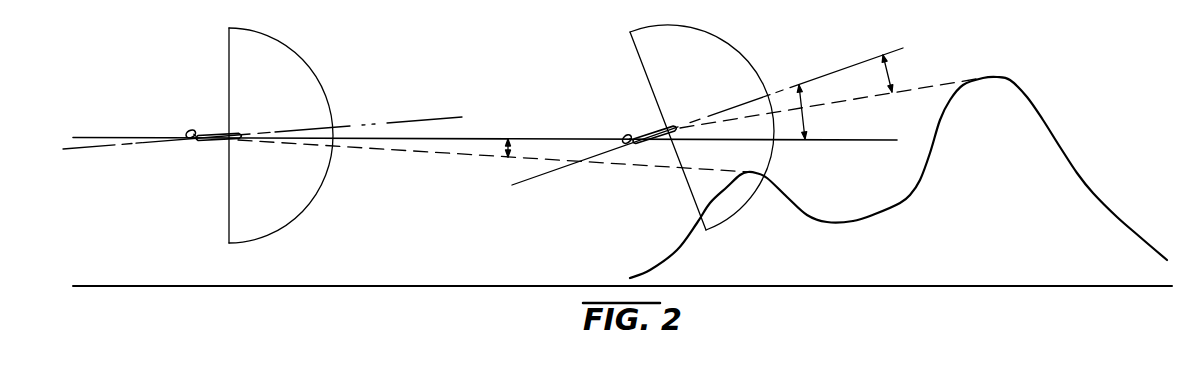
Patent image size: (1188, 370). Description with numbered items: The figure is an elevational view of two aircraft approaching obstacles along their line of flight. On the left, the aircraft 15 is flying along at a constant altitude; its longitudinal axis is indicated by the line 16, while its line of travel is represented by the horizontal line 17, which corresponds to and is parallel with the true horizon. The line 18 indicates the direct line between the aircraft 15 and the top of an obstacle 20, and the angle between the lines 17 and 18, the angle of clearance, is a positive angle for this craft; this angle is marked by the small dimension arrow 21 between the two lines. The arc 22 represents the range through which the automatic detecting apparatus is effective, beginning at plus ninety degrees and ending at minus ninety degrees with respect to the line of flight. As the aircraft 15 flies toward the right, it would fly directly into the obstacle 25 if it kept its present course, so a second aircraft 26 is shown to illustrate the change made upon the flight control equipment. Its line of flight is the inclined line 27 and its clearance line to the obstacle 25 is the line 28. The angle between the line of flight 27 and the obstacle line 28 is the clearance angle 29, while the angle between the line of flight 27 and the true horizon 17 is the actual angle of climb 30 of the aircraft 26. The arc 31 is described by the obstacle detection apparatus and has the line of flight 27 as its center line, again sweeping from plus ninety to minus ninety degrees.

The aircraft 15 is at (201, 143).
The longitudinal axis line 16 is at (413, 117).
The line of travel 17 is at (474, 139).
The direct line to obstacle 18 is at (432, 152).
The obstacle 20 is at (747, 174).
The depression angle 21 is at (506, 157).
The arc of effectiveness 22 is at (305, 208).
The obstacle 25 is at (984, 79).
The aircraft 26 is at (640, 143).
The line of flight 27 is at (853, 65).
The clearance line 28 is at (863, 100).
The clearance angle 29 is at (888, 72).
The angle of climb 30 is at (803, 118).
The detection arc 31 is at (727, 221).